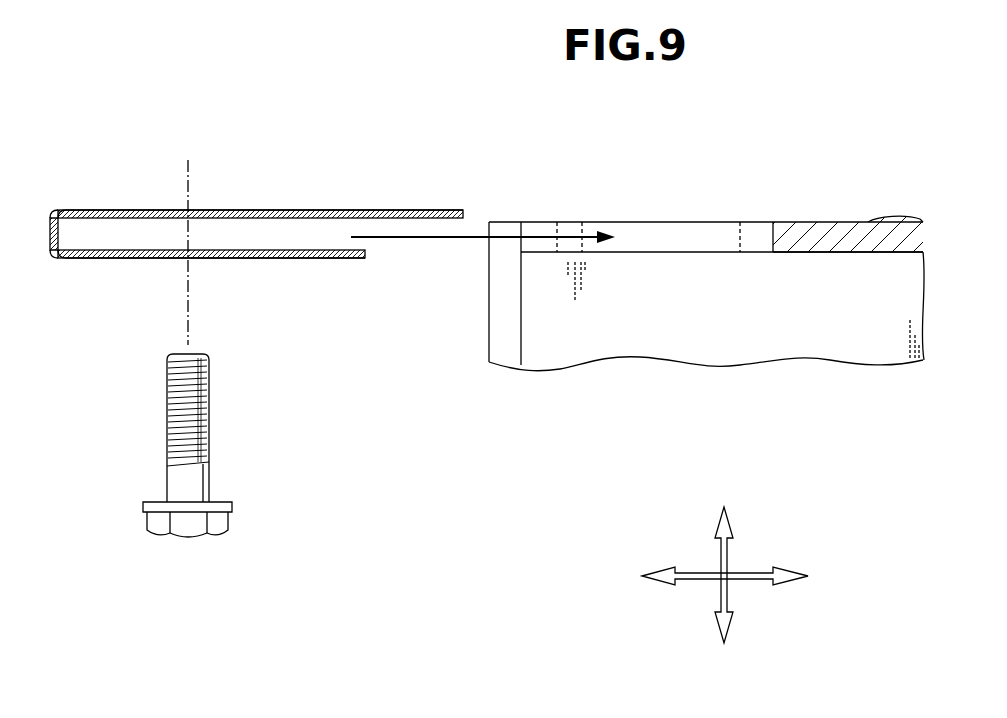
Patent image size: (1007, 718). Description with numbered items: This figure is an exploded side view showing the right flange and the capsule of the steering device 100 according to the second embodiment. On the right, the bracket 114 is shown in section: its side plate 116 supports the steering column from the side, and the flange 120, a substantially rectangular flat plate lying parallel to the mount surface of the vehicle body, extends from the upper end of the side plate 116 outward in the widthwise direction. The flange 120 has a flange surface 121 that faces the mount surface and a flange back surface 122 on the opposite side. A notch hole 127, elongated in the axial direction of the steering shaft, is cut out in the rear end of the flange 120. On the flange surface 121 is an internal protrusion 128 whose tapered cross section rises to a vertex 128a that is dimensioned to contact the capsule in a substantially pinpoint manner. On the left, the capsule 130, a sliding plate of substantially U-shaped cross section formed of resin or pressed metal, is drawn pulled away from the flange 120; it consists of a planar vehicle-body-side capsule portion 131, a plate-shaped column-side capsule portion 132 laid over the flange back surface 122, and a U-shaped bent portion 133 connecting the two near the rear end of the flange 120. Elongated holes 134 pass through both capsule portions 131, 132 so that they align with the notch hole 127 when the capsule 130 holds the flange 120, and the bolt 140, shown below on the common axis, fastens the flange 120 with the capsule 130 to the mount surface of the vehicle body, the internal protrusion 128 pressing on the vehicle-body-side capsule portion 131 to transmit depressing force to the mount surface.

The steering device 100 is at (431, 98).
The bracket 114 is at (529, 384).
The side plate 116 is at (628, 348).
The flange 120 is at (654, 216).
The flange surface 121 is at (830, 222).
The flange back surface 122 is at (827, 253).
The notch hole 127 is at (757, 237).
The internal protrusion 128 is at (872, 218).
The vertex 128a is at (890, 218).
The capsule 130 is at (81, 204).
The vehicle-body-side capsule portion 131 is at (348, 209).
The column-side capsule portion 132 is at (330, 260).
The bent portion 133 is at (50, 240).
The elongated hole 134 is at (230, 210).
The bolt 140 is at (209, 447).